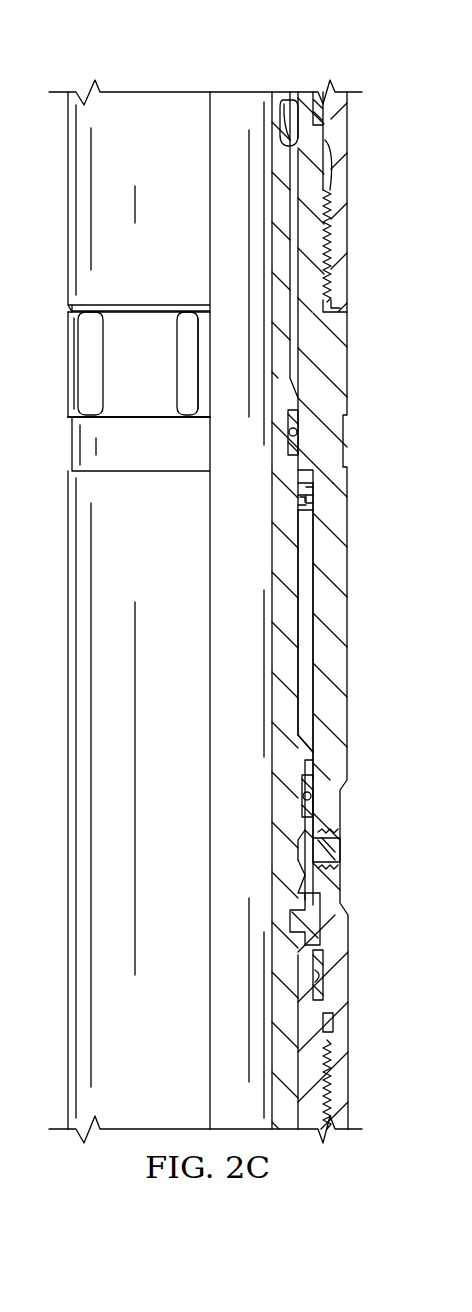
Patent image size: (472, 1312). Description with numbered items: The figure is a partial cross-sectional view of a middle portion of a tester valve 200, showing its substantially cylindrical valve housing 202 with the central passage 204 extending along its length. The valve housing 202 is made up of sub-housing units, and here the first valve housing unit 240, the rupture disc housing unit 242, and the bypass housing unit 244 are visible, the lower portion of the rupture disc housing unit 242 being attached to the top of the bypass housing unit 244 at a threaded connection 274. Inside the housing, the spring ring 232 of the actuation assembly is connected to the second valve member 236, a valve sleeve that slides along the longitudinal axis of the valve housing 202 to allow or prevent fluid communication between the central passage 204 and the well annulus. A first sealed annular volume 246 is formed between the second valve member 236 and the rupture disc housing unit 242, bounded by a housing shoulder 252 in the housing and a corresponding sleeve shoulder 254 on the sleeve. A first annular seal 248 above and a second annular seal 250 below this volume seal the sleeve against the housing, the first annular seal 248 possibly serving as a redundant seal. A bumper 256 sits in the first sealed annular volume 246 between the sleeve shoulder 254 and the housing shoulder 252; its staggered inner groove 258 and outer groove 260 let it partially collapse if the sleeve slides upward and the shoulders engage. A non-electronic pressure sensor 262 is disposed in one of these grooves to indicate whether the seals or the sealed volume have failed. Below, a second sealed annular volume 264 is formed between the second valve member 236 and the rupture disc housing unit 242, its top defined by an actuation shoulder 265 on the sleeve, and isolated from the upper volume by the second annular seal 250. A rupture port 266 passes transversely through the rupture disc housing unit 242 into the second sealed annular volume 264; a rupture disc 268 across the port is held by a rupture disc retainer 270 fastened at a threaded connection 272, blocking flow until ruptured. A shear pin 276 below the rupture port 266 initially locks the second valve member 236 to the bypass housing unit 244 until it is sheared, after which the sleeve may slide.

The tester valve 200 is at (170, 76).
The valve housing 202 is at (356, 624).
The central passage 204 is at (262, 672).
The spring ring 232 is at (282, 92).
The second valve member 236 is at (284, 364).
The first valve housing unit 240 is at (345, 160).
The rupture disc housing unit 242 is at (345, 563).
The bypass housing unit 244 is at (318, 995).
The first sealed annular volume 246 is at (305, 692).
The first annular seal 248 is at (300, 430).
The second annular seal 250 is at (315, 790).
The housing shoulder 252 is at (298, 483).
The sleeve shoulder 254 is at (305, 748).
The bumper 256 is at (308, 505).
The inner groove 258 is at (315, 505).
The outer groove 260 is at (313, 490).
The non-electronic pressure sensor 262 is at (297, 502).
The second sealed annular volume 264 is at (305, 868).
The actuation shoulder 265 is at (300, 838).
The rupture port 266 is at (305, 848).
The rupture disc 268 is at (340, 850).
The rupture disc retainer 270 is at (340, 868).
The threaded connection 272 is at (332, 832).
The threaded connection 274 is at (335, 1070).
The shear pin 276 is at (320, 918).